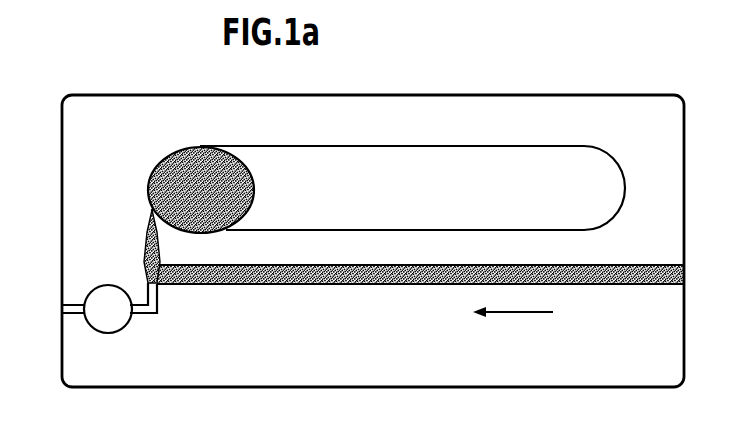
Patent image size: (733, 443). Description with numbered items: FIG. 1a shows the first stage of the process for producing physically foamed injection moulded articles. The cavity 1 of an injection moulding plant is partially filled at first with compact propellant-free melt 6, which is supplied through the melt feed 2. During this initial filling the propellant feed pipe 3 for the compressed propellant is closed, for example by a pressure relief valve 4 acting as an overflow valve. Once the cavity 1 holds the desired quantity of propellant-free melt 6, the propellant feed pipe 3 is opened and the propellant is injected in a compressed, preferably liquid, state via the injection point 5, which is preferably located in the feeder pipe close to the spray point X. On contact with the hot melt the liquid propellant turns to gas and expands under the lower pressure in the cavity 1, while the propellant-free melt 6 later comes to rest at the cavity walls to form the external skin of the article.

The cavity 1 is at (528, 162).
The melt feed 2 is at (350, 286).
The propellant feed pipe 3 is at (148, 320).
The pressure relief valve 4 is at (102, 335).
The injection point 5 is at (147, 278).
The propellant-free melt 6 is at (187, 177).
The spray point X is at (150, 208).